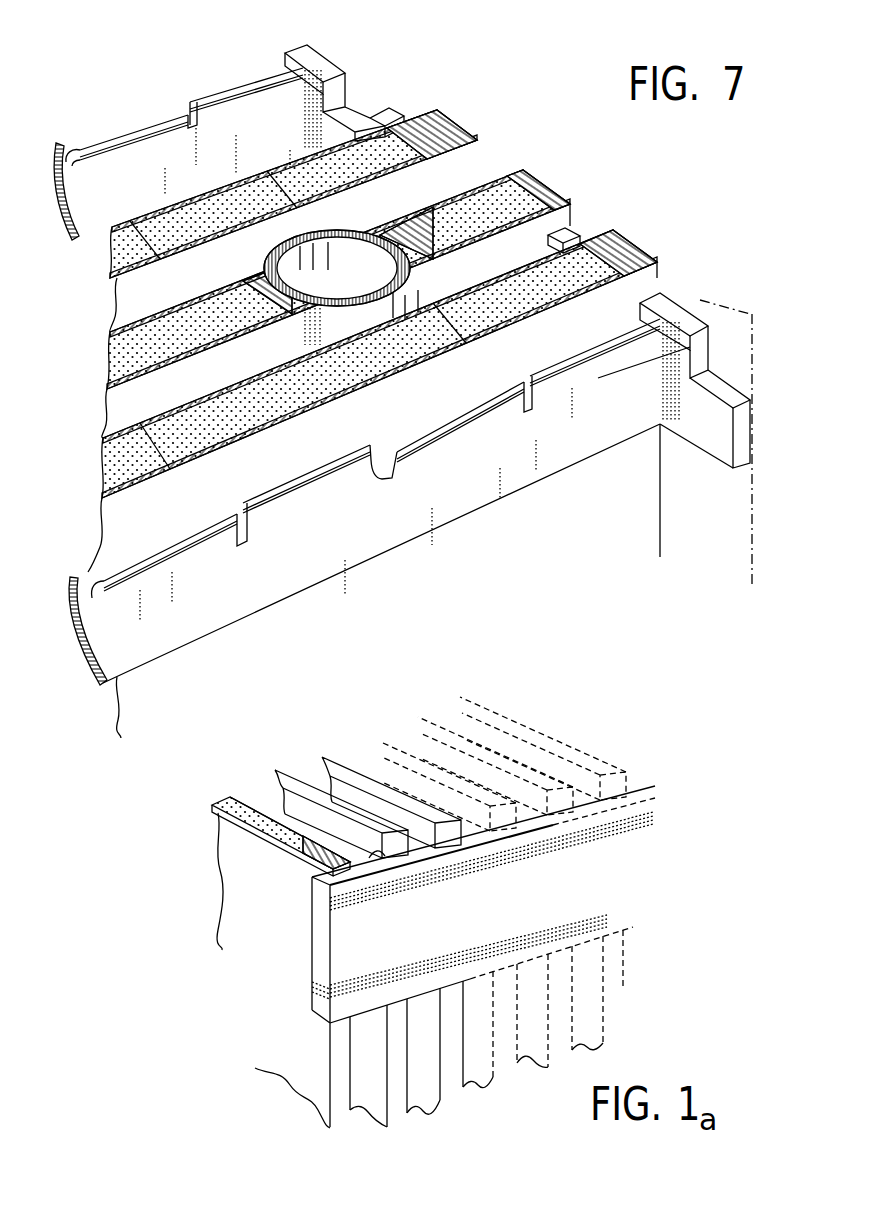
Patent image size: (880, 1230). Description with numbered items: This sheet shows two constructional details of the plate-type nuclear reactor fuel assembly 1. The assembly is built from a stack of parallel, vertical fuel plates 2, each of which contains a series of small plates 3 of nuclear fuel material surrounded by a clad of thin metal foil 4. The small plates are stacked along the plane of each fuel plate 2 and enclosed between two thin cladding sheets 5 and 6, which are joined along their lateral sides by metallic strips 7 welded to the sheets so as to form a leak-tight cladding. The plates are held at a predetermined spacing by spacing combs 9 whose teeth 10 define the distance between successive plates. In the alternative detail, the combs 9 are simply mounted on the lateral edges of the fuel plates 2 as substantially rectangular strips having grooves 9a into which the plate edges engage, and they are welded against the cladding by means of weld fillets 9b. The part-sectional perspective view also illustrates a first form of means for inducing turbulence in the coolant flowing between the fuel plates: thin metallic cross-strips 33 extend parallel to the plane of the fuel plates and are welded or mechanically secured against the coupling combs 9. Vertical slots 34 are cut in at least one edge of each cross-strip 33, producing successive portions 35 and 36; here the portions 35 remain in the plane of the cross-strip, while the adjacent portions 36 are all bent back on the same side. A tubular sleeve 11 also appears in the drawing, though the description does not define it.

In FIG. 1a, the plate-type nuclear reactor fuel assembly 1 is at (233, 995).
In FIG. 7, the fuel plate 2 is at (697, 292).
In FIG. 1a, the fuel plate 2 is at (221, 850).
In FIG. 7, the small plate of nuclear fuel material 3 is at (540, 277).
In FIG. 1a, the small plate of nuclear fuel material 3 is at (228, 810).
In FIG. 7, the thin metal foil 4 is at (152, 352).
In FIG. 7, the cladding sheet 5 is at (556, 213).
In FIG. 1a, the cladding sheet 5 is at (263, 845).
In FIG. 7, the cladding sheet 6 is at (448, 192).
In FIG. 1a, the cladding sheet 6 is at (232, 800).
In FIG. 7, the metallic strip 7 is at (532, 180).
In FIG. 1a, the metallic strip 7 is at (305, 855).
In FIG. 7, the spacing comb 9 is at (725, 452).
In FIG. 1a, the spacing comb 9 is at (320, 958).
In FIG. 1a, the groove 9a is at (372, 852).
In FIG. 1a, the weld fillet 9b is at (543, 930).
In FIG. 7, the tooth 10 is at (327, 62).
In FIG. 7, the tubular sleeve 11 is at (268, 254).
In FIG. 7, the cross-strip 33 is at (197, 99).
In FIG. 7, the vertical slot 34 is at (373, 472).
In FIG. 7, the cut-out portion 35 is at (242, 505).
In FIG. 7, the cut-out portion 36 is at (494, 407).